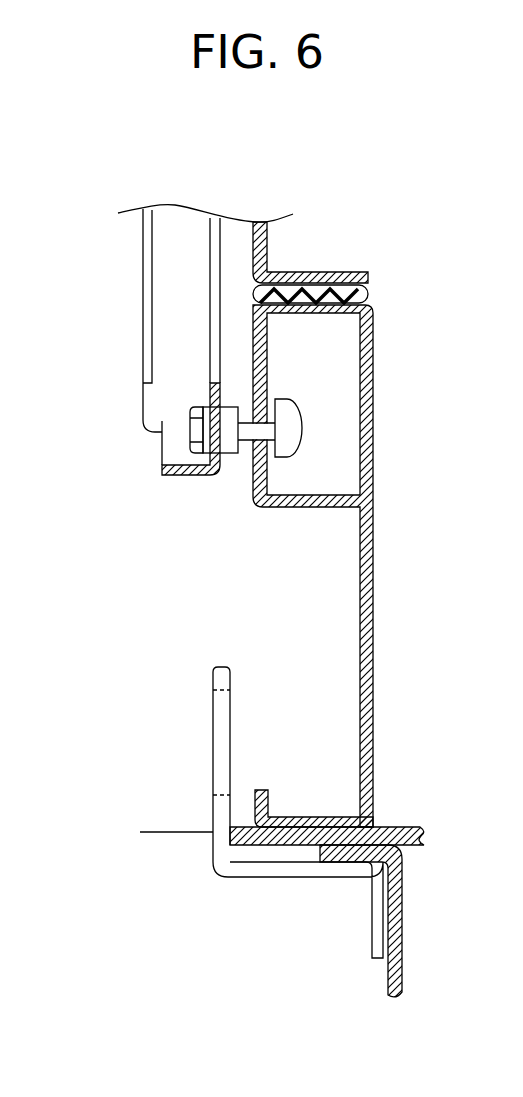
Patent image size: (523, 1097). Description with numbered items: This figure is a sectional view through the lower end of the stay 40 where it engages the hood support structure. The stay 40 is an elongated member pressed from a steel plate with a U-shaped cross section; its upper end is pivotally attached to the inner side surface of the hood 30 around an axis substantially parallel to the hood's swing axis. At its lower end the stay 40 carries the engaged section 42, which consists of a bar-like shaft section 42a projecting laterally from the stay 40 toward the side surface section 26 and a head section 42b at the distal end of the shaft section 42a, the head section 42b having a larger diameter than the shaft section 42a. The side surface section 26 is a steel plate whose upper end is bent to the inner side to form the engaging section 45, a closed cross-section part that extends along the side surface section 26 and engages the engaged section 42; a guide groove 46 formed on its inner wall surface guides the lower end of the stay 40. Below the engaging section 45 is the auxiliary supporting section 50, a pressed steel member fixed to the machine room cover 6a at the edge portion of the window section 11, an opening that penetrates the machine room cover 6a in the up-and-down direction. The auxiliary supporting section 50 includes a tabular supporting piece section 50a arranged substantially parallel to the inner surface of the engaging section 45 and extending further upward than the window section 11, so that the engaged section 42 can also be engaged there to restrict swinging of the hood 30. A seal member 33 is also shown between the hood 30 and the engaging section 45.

The machine room cover 6a is at (403, 826).
The window section 11 is at (167, 819).
The side surface section 26 is at (373, 657).
The hood 30 is at (340, 272).
The seal member 33 is at (366, 290).
The stay 40 is at (143, 277).
The engaged section 42 is at (200, 564).
The shaft section 42a is at (248, 434).
The head section 42b is at (294, 457).
The engaging section 45 is at (338, 410).
The guide groove 46 is at (271, 421).
The auxiliary supporting section 50 is at (221, 887).
The supporting piece section 50a is at (213, 715).